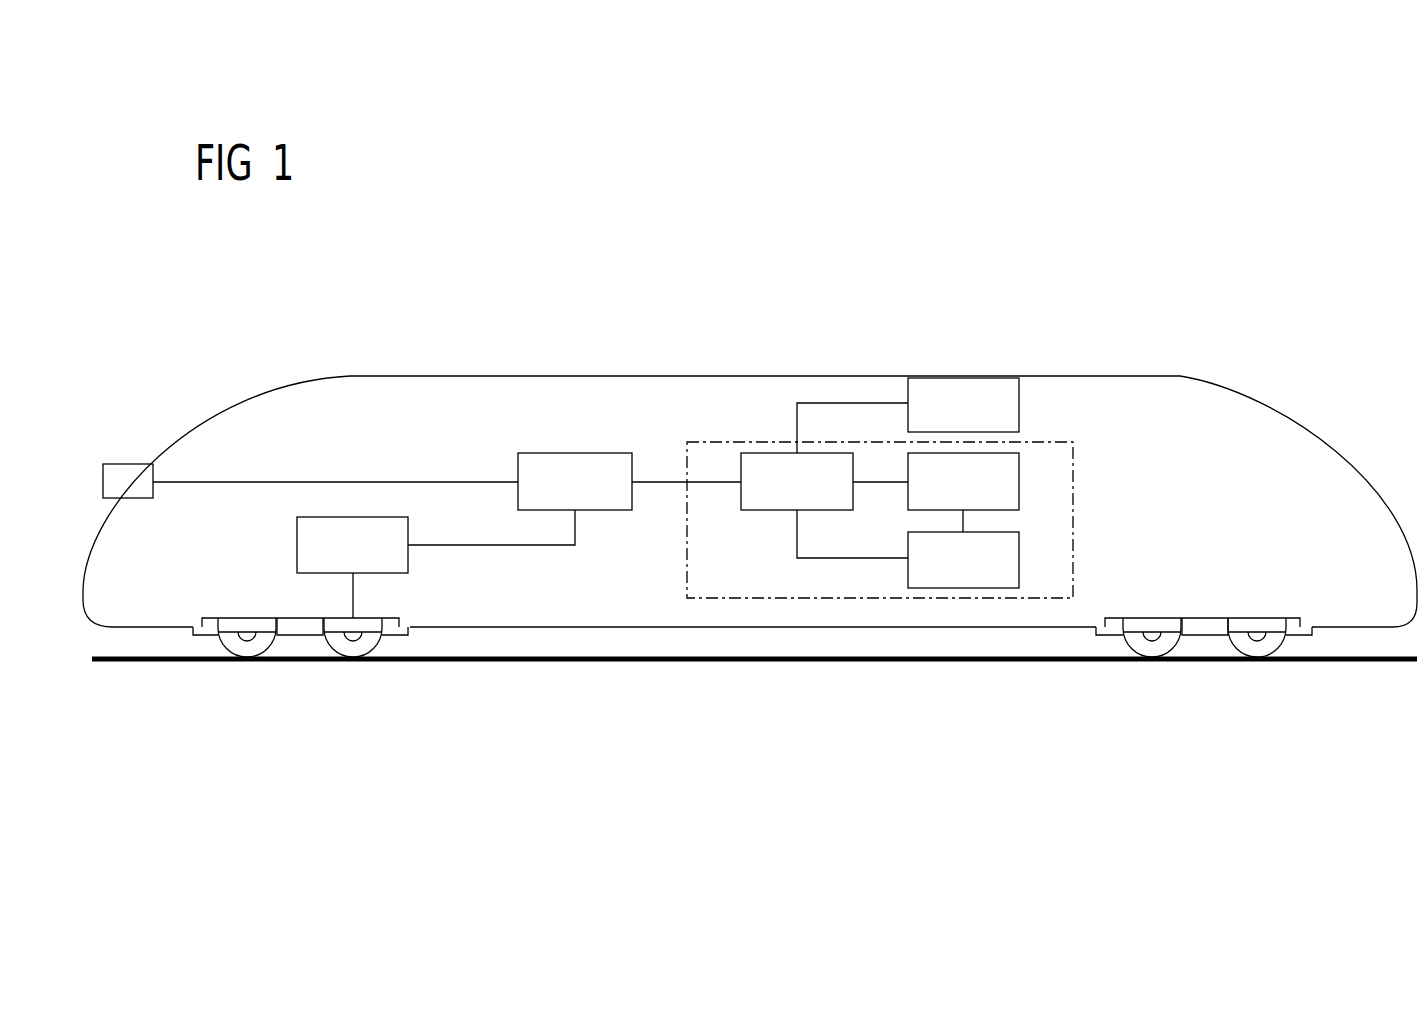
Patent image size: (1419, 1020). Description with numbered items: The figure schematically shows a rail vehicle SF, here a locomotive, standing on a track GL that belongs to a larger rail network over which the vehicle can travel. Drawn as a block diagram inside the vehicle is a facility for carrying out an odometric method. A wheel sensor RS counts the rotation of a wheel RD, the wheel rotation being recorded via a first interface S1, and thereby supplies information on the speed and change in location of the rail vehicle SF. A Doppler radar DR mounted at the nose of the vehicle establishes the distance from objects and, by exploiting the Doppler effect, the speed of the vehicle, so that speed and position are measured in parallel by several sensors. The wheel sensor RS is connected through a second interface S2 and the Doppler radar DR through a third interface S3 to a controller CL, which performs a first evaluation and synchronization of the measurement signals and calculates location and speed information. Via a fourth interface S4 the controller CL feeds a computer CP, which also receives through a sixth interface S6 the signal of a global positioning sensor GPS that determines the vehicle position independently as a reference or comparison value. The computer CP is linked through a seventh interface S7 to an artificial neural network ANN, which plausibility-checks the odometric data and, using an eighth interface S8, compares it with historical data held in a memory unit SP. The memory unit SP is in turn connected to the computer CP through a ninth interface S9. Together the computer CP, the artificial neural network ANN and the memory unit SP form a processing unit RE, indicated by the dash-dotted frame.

The rail vehicle SF is at (532, 376).
The Doppler radar DR is at (125, 464).
The wheel sensor RS is at (311, 517).
The controller CL is at (593, 453).
The computer CP is at (805, 453).
The artificial neural network ANN is at (1020, 470).
The memory unit SP is at (928, 588).
The global positioning sensor GPS is at (984, 378).
The processing unit RE is at (1075, 475).
The wheel RD is at (353, 663).
The track GL is at (880, 665).
The first interface S1 is at (356, 595).
The second interface S2 is at (505, 545).
The third interface S3 is at (446, 482).
The fourth interface S4 is at (657, 482).
The sixth interface S6 is at (796, 425).
The seventh interface S7 is at (880, 483).
The eighth interface S8 is at (964, 521).
The ninth interface S9 is at (797, 540).